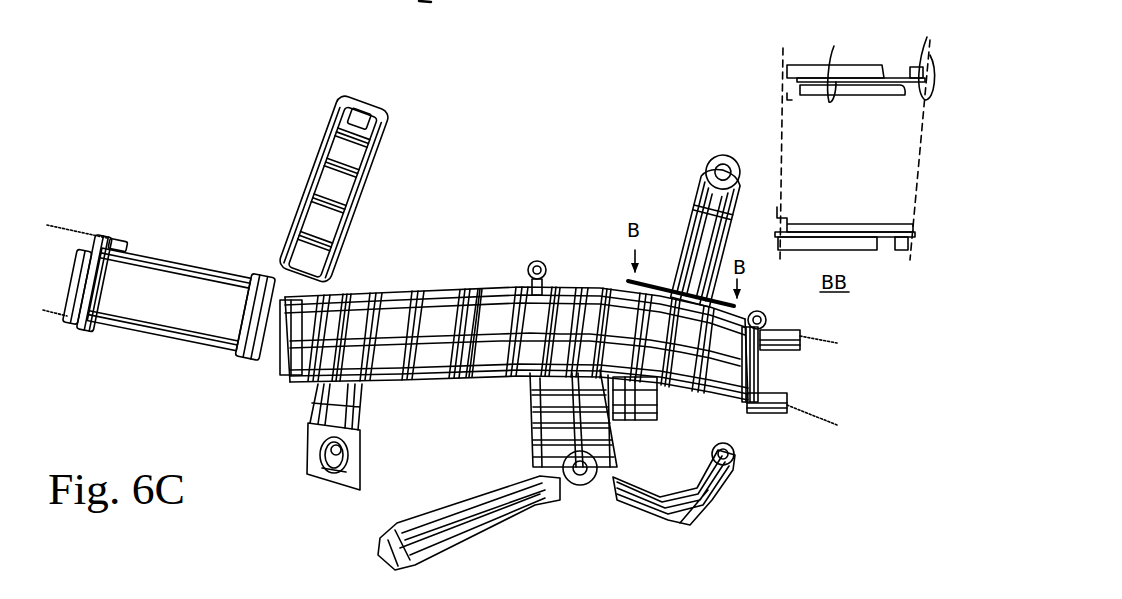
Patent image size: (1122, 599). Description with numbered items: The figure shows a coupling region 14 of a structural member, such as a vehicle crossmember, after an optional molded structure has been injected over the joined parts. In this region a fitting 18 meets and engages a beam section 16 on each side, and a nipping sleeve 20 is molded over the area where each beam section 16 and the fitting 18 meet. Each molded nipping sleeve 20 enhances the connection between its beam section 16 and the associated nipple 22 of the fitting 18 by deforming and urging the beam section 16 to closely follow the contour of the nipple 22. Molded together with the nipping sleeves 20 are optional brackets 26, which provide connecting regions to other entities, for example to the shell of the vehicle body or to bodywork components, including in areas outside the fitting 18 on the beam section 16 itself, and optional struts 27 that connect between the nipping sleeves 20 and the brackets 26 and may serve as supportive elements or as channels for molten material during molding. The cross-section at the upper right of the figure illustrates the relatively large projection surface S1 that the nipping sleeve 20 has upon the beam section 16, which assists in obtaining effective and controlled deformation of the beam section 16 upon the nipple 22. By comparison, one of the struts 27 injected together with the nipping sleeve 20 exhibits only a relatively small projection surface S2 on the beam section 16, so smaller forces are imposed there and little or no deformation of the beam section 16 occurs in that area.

The coupling region 14 is at (243, 256).
The beam section 16 is at (58, 260).
The fitting 18 is at (442, 336).
The nipping sleeve 20 is at (296, 336).
The nipple 22 is at (813, 98).
The bracket 26 is at (396, 131).
The strut 27 is at (913, 67).
The projection surface of nipping sleeve S1 is at (829, 59).
The projection surface of strut S2 is at (928, 56).